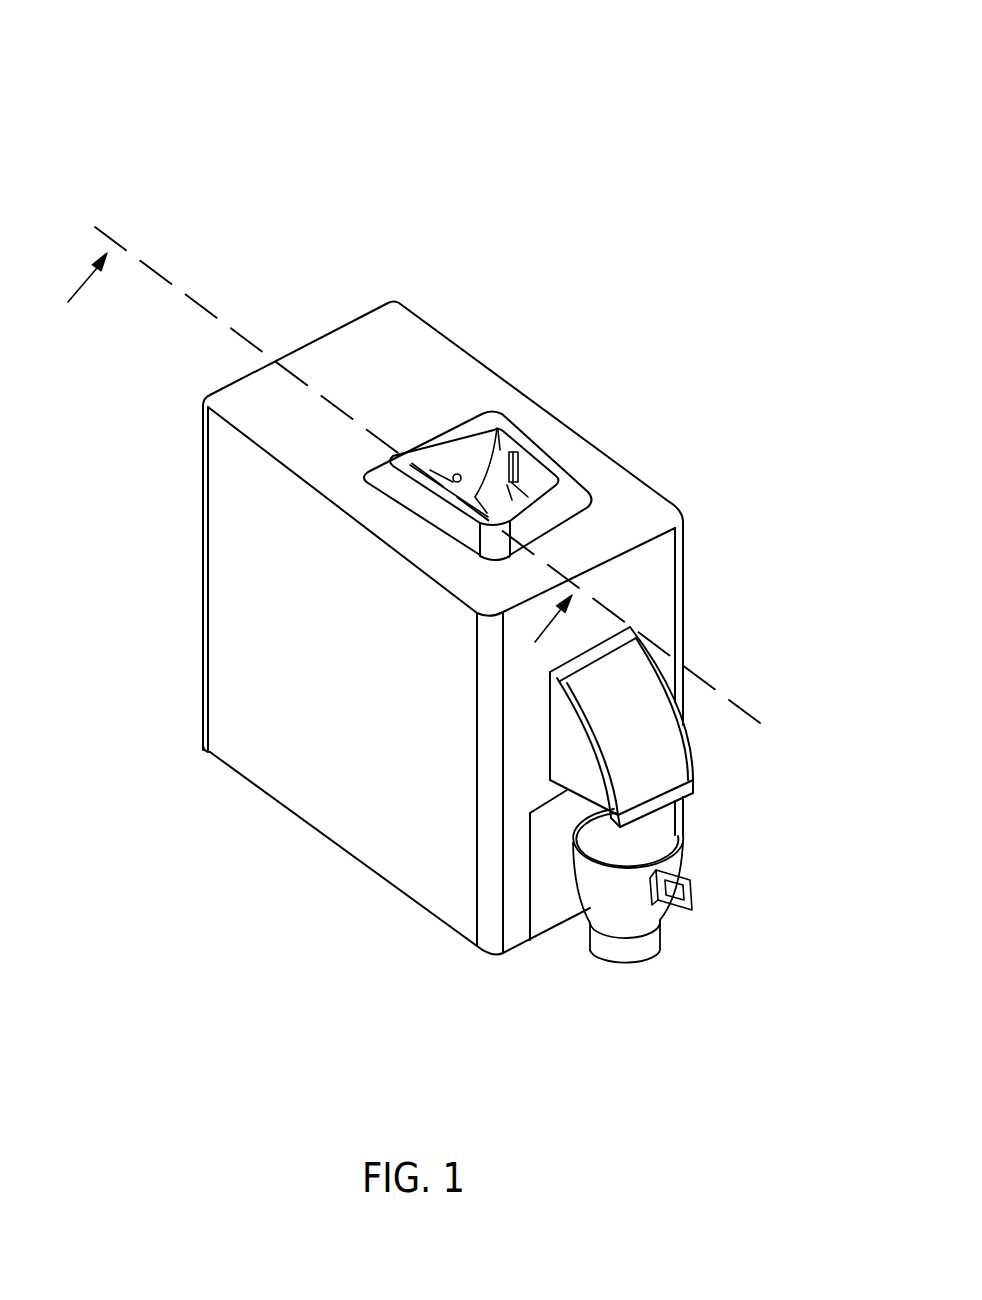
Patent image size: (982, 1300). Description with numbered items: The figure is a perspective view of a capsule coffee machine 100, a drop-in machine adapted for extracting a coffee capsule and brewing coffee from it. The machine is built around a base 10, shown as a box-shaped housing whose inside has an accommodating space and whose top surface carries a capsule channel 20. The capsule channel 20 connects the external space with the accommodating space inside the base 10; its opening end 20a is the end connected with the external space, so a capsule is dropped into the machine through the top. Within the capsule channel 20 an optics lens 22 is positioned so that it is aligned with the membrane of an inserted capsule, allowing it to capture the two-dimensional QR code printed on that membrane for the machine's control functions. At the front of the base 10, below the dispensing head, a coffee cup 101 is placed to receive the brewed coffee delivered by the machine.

The capsule coffee machine 100 is at (92, 30).
The base 10 is at (284, 307).
The capsule channel 20 is at (544, 456).
The opening end 20a is at (505, 442).
The optics lens 22 is at (457, 474).
The coffee cup 101 is at (640, 927).